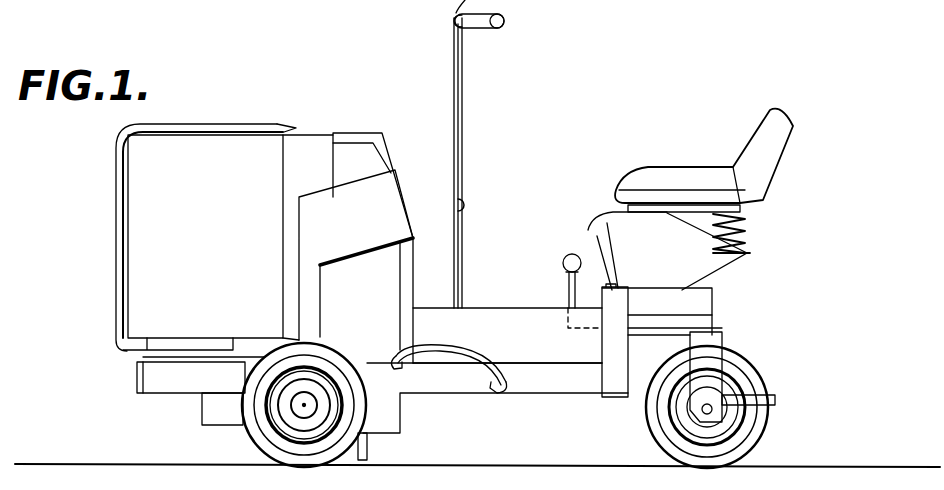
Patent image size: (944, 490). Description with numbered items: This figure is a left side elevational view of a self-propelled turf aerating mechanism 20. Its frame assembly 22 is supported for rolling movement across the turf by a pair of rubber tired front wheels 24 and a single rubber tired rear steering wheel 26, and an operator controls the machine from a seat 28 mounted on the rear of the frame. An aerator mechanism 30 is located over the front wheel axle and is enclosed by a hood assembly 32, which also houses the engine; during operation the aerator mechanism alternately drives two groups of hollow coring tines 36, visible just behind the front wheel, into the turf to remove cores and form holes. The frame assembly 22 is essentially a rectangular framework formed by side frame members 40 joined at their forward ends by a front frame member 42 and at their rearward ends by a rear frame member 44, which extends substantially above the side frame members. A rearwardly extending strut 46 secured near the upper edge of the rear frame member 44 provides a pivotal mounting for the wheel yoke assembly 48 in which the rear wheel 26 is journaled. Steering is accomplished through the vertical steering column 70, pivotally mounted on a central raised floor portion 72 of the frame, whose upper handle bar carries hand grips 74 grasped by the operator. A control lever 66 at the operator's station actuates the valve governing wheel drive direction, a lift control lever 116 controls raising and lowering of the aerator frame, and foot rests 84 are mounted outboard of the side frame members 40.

The turf aerating mechanism 20 is at (356, 132).
The frame assembly 22 is at (560, 387).
The front wheels 24 is at (250, 442).
The rear steering wheel 26 is at (757, 378).
The seat 28 is at (678, 166).
The aerator mechanism 30 is at (230, 143).
The hood assembly 32 is at (140, 199).
The hollow coring tines 36 is at (370, 449).
The side frame members 40 is at (170, 385).
The front frame member 42 is at (137, 370).
The rear frame member 44 is at (620, 354).
The strut 46 is at (652, 292).
The wheel yoke assembly 48 is at (718, 343).
The control lever 66 is at (464, 235).
The vertical steering column 70 is at (470, 126).
The central raised floor portion 72 is at (512, 320).
The hand grips 74 is at (492, 28).
The foot rests 84 is at (476, 356).
The lift control lever 116 is at (572, 255).